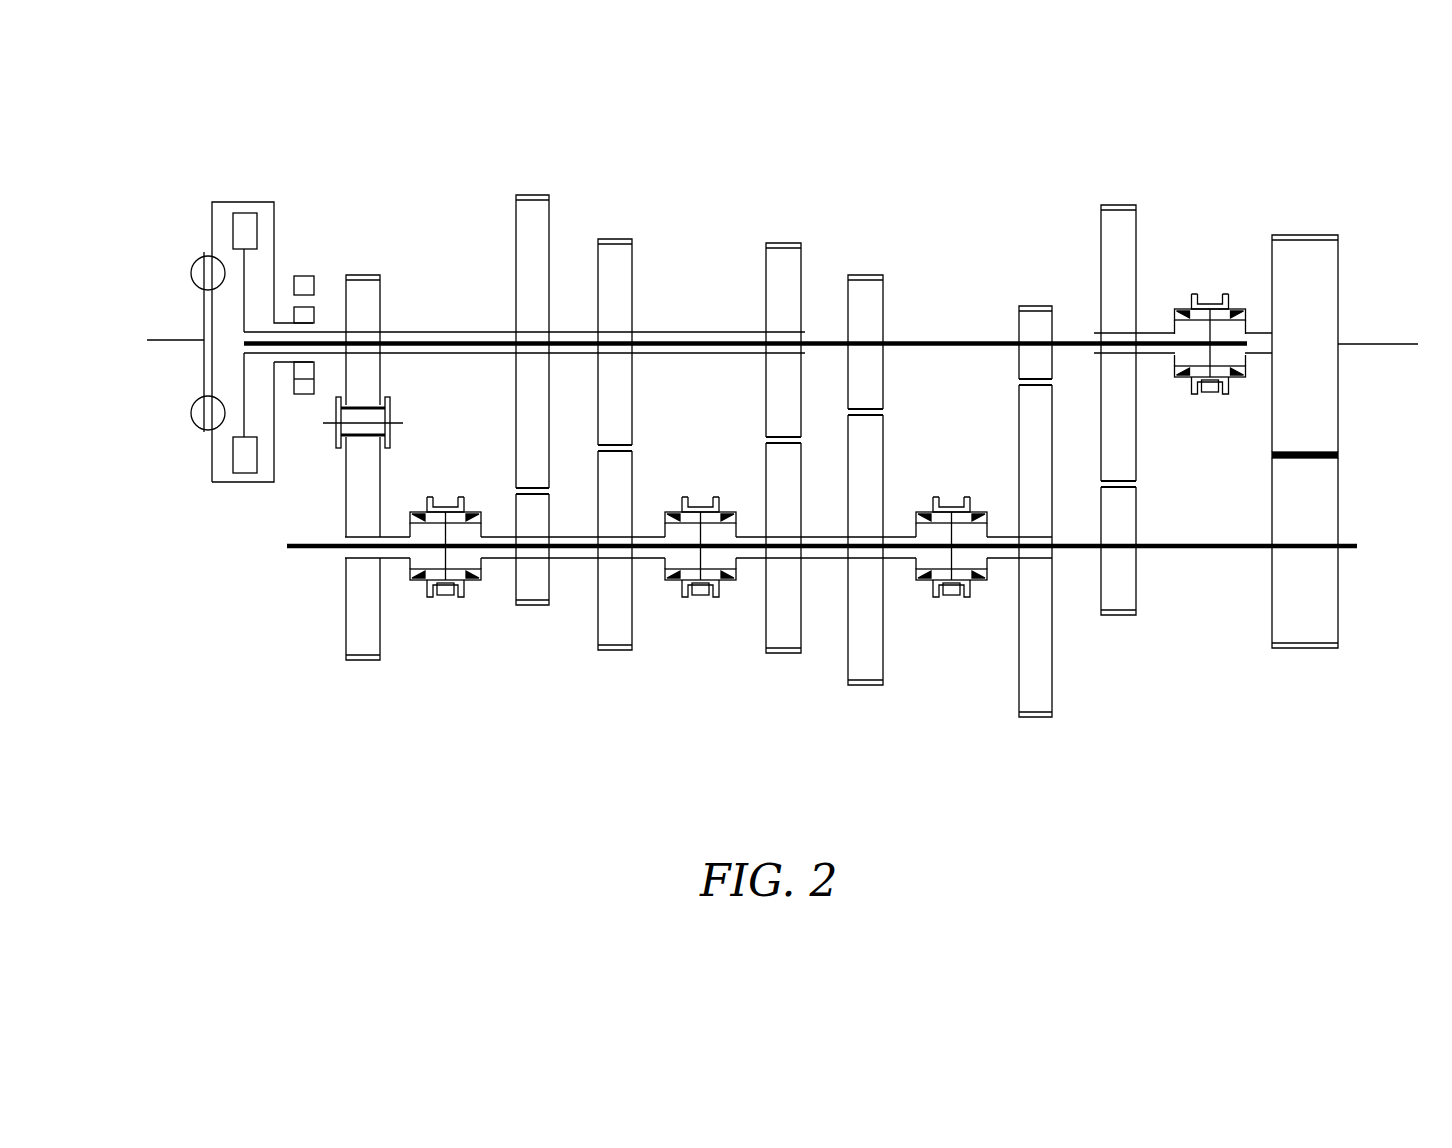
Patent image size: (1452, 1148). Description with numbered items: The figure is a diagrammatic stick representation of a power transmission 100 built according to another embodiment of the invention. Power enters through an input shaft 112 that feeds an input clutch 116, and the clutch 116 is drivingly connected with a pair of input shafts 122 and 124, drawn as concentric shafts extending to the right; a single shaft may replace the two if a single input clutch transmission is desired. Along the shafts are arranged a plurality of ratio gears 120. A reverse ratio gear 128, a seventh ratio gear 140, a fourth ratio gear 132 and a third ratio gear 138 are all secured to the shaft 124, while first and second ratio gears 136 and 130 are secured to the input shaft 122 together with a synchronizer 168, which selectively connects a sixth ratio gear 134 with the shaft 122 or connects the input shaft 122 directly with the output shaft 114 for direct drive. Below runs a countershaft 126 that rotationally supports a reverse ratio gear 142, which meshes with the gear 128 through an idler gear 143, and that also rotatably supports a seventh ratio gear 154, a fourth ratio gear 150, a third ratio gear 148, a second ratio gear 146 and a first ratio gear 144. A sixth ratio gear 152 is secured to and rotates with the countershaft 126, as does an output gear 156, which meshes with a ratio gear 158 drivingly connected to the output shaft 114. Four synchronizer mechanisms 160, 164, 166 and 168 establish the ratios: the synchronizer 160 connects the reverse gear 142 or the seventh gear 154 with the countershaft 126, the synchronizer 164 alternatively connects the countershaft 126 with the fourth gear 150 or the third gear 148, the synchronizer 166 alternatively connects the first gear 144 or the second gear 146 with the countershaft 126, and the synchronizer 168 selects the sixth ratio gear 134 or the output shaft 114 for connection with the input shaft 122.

The power transmission 100 is at (525, 190).
The input shaft 112 is at (173, 328).
The output shaft 114 is at (1375, 344).
The input clutch 116 is at (245, 196).
The ratio gears 120 is at (568, 713).
The input shaft 122 is at (672, 343).
The input shaft 124 is at (398, 332).
The countershaft 126 is at (287, 546).
The reverse ratio gear 128 is at (363, 275).
The second ratio gear 130 is at (865, 275).
The fourth ratio gear 132 is at (632, 278).
The sixth ratio gear 134 is at (1136, 213).
The first ratio gear 136 is at (1052, 320).
The third ratio gear 138 is at (782, 243).
The seventh ratio gear 140 is at (549, 207).
The reverse ratio gear 142 is at (380, 638).
The idler gear 143 is at (403, 423).
The first ratio gear 144 is at (1052, 688).
The second ratio gear 146 is at (847, 662).
The third ratio gear 148 is at (765, 638).
The fourth ratio gear 150 is at (629, 630).
The sixth ratio gear 152 is at (1101, 592).
The seventh ratio gear 154 is at (549, 583).
The output gear 156 is at (1340, 612).
The ratio gear 158 is at (1340, 425).
The synchronizer mechanism 160 is at (460, 447).
The synchronizer mechanism 164 is at (703, 487).
The synchronizer mechanism 166 is at (956, 487).
The synchronizer mechanism 168 is at (1211, 277).